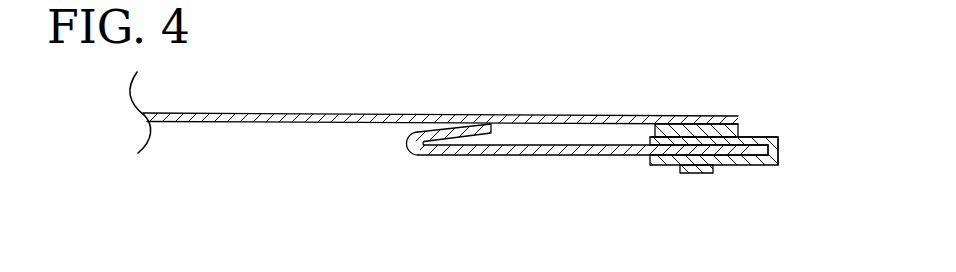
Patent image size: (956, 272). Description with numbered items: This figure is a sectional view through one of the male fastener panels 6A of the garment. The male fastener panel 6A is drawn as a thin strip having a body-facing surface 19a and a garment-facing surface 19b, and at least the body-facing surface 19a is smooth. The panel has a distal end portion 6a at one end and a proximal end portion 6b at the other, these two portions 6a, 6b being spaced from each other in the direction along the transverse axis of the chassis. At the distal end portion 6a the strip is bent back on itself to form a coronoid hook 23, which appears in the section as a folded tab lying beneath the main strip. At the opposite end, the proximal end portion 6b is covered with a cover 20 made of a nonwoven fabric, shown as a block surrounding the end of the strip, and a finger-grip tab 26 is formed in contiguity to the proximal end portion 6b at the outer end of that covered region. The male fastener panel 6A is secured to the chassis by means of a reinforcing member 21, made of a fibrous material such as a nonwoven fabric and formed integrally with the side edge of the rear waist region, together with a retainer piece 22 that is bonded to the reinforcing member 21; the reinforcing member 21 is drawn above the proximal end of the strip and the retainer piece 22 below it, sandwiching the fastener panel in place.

The male fastener panel 6A is at (567, 153).
The distal end portion 6a is at (407, 141).
The proximal end portion 6b is at (716, 153).
The body-facing surface 19a is at (463, 156).
The garment-facing surface 19b is at (523, 145).
The cover 20 is at (778, 162).
The reinforcing member 21 is at (695, 128).
The retainer piece 22 is at (690, 174).
The coronoid hook 23 is at (427, 132).
The finger-grip tab 26 is at (775, 137).